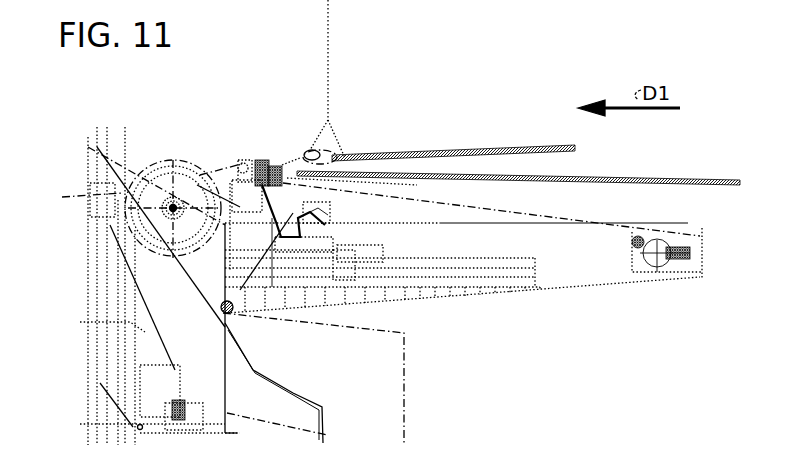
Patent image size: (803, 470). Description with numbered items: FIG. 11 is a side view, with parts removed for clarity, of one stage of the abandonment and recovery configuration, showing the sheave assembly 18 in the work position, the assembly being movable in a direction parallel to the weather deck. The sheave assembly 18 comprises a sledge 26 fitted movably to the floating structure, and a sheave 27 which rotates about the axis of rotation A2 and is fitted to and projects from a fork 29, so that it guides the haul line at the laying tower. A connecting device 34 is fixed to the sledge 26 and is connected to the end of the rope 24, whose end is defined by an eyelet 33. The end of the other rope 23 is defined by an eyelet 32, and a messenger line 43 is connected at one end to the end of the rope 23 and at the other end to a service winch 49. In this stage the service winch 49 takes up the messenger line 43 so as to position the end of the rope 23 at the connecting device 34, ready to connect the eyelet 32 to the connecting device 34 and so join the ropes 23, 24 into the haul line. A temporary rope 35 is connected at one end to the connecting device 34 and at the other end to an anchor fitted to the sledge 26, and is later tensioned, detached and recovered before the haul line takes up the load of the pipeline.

The axis of rotation A2 is at (62, 197).
The sheave 27 is at (173, 168).
The fork 29 is at (203, 202).
The connecting device 34 is at (270, 138).
The eyelet 32 is at (318, 148).
The rope 23 is at (430, 152).
The rope 24 is at (617, 179).
The eyelet 33 is at (366, 191).
The messenger line 43 is at (592, 230).
The temporary rope 35 is at (228, 276).
The sheave assembly 18 is at (407, 311).
The sledge 26 is at (279, 290).
The service winch 49 is at (683, 234).